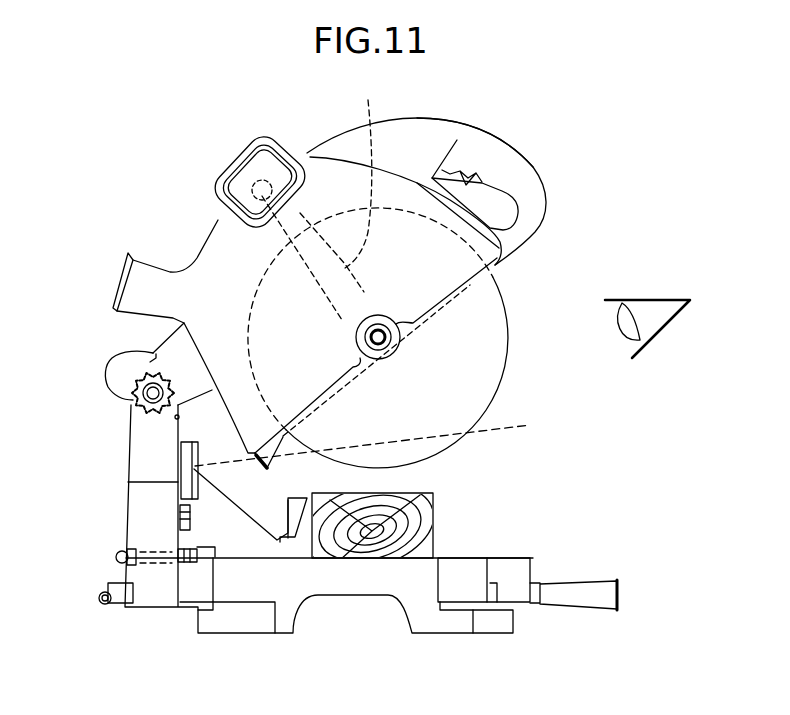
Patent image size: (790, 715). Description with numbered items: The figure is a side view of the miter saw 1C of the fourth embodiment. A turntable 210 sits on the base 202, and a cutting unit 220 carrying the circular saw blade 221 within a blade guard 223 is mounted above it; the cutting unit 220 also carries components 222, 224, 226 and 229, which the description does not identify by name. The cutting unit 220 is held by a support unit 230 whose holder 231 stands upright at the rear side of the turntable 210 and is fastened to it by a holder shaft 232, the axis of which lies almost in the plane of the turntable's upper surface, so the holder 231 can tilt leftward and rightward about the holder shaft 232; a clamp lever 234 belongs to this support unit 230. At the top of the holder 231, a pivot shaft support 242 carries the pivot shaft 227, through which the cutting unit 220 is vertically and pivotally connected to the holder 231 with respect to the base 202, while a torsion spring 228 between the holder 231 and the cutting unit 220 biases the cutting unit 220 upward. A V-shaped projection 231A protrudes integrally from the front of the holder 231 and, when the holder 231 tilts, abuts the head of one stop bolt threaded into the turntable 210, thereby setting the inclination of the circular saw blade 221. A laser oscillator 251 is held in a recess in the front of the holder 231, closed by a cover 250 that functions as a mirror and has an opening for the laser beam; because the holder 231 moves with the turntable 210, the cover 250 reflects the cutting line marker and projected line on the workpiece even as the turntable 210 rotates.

The miter saw 1C is at (668, 182).
The base 202 is at (420, 622).
The turntable 210 is at (466, 557).
The cutting unit 220 is at (505, 130).
The circular saw blade 221 is at (483, 383).
The blade cover 222 is at (177, 345).
The blade guard 223 is at (455, 278).
The handle 224 is at (517, 168).
The knob 226 is at (276, 167).
The pivot shaft 227 is at (150, 393).
The torsion spring 228 is at (150, 360).
The motor 229 is at (323, 200).
The support unit 230 is at (105, 486).
The holder 231 is at (133, 503).
The V-shaped projection 231A is at (172, 514).
The holder shaft 232 is at (215, 543).
The clamp lever 234 is at (104, 605).
The pivot shaft support 242 is at (140, 403).
The cover 250 is at (197, 454).
The laser oscillator 251 is at (190, 458).